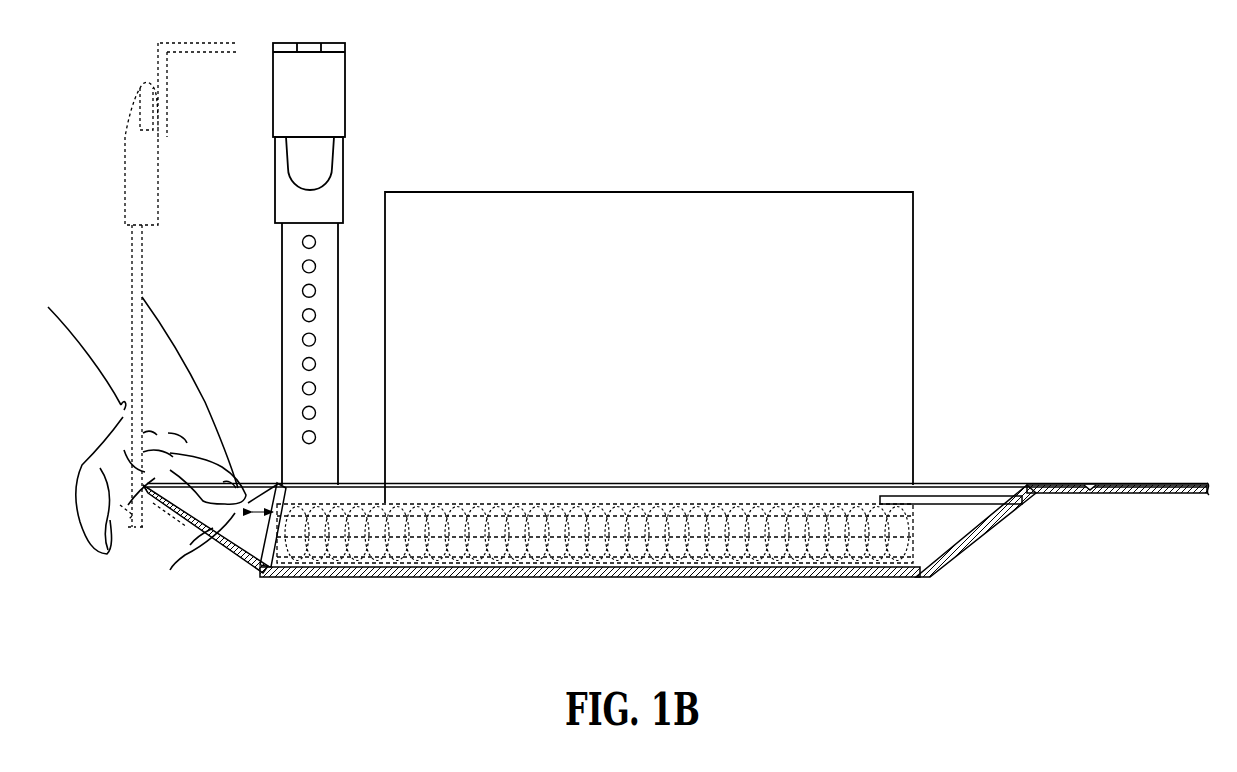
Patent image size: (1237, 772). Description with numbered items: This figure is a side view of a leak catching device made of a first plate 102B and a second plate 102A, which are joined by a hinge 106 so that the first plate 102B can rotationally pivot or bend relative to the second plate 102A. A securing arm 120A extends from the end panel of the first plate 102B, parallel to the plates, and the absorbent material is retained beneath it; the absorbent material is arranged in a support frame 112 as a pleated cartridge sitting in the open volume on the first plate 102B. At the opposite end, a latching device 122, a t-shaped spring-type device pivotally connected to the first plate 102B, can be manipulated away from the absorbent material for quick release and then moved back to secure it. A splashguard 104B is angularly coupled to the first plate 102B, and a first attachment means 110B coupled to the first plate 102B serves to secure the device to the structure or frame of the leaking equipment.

The first attachment means 110B is at (348, 147).
The splashguard 104B is at (700, 220).
The securing arm 120A is at (970, 500).
The hinge 106 is at (1090, 495).
The second plate 102A is at (1140, 494).
The first plate 102B is at (487, 570).
The support frame 112 is at (352, 543).
The latching device 122 is at (226, 536).